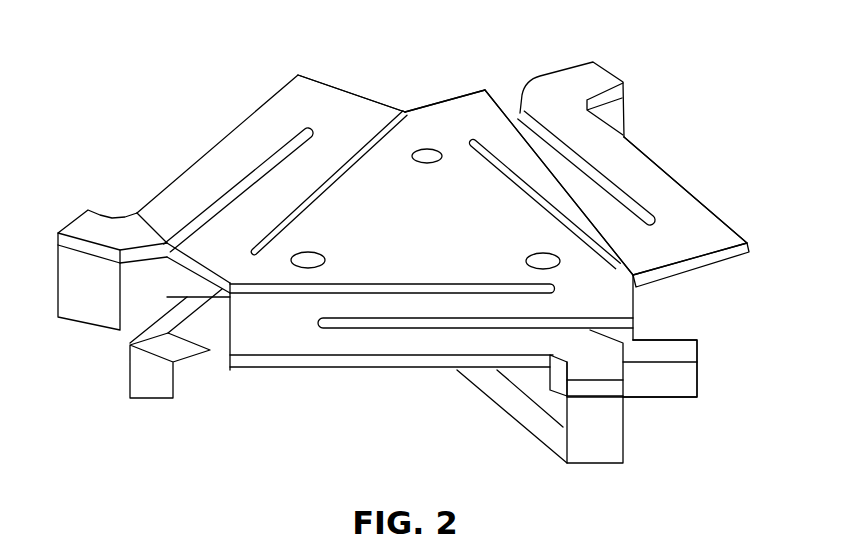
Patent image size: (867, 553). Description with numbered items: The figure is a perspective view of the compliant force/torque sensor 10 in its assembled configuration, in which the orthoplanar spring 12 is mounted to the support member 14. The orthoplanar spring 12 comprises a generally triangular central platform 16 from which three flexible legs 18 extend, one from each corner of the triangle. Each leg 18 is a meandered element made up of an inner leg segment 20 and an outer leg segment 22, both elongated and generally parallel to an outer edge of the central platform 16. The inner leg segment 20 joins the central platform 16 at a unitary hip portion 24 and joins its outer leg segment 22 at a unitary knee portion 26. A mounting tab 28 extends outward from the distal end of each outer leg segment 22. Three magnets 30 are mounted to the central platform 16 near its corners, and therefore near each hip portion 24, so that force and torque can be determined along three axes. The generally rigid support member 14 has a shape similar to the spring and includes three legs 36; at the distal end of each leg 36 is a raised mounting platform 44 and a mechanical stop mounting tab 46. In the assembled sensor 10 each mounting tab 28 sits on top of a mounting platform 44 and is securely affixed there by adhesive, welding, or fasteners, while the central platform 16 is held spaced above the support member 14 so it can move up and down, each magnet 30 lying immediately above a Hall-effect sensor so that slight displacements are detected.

The compliant force/torque sensor 10 is at (742, 52).
The orthoplanar spring 12 is at (740, 153).
The support member 14 is at (86, 370).
The central platform 16 is at (437, 232).
The flexible leg 18 is at (195, 138).
The inner leg segment 20 is at (297, 180).
The outer leg segment 22 is at (251, 133).
The hip portion 24 is at (202, 256).
The knee portion 26 is at (267, 322).
The mounting tab 28 is at (88, 223).
The magnet 30 is at (427, 163).
The leg 36 is at (495, 430).
The raised mounting platform 44 is at (67, 283).
The mechanical stop mounting tab 46 is at (150, 372).